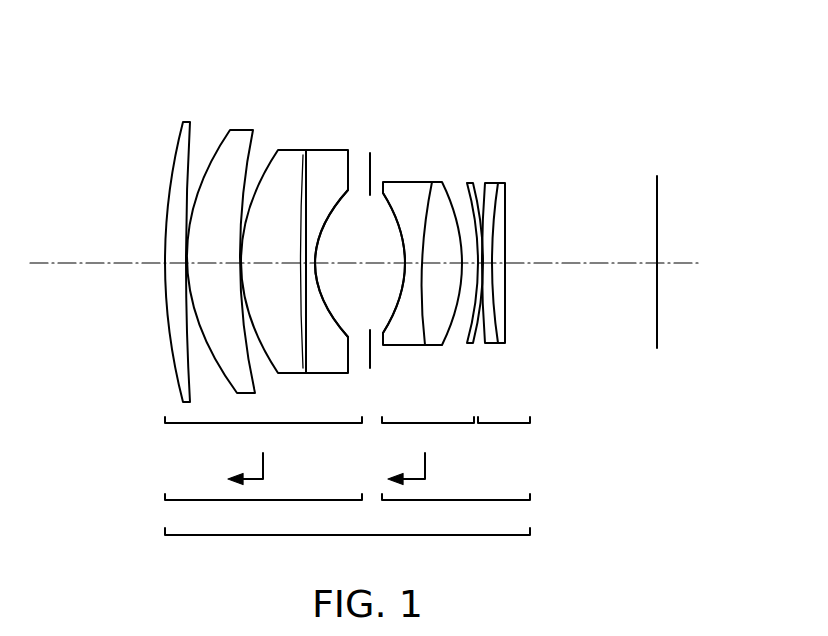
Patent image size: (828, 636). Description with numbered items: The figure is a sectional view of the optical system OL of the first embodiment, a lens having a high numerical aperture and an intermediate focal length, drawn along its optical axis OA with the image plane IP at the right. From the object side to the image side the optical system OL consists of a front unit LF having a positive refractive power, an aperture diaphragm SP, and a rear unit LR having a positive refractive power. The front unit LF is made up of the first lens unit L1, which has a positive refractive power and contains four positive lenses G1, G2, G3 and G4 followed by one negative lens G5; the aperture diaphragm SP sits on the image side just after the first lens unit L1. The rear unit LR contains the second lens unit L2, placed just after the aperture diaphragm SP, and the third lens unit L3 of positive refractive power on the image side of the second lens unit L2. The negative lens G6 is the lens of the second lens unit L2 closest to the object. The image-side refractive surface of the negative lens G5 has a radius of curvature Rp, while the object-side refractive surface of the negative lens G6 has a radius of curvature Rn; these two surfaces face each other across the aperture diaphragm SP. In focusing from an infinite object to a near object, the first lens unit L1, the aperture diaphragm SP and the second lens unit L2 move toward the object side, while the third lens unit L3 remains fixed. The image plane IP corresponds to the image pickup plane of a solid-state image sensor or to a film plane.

The positive lens G1 is at (182, 121).
The positive lens G2 is at (233, 150).
The positive lens G3 is at (291, 152).
The positive lens G4 is at (305, 193).
The negative lens G5 is at (330, 163).
The negative lens G6 is at (405, 190).
The aperture diaphragm SP is at (372, 168).
The radius of curvature Rp is at (330, 204).
The radius of curvature Rn is at (398, 305).
The optical axis OA is at (595, 262).
The image plane IP is at (657, 242).
The first lens unit L1 is at (263, 451).
The second lens unit L2 is at (428, 451).
The third lens unit L3 is at (498, 319).
The front unit LF is at (263, 512).
The rear unit LR is at (456, 512).
The optical system OL is at (347, 551).